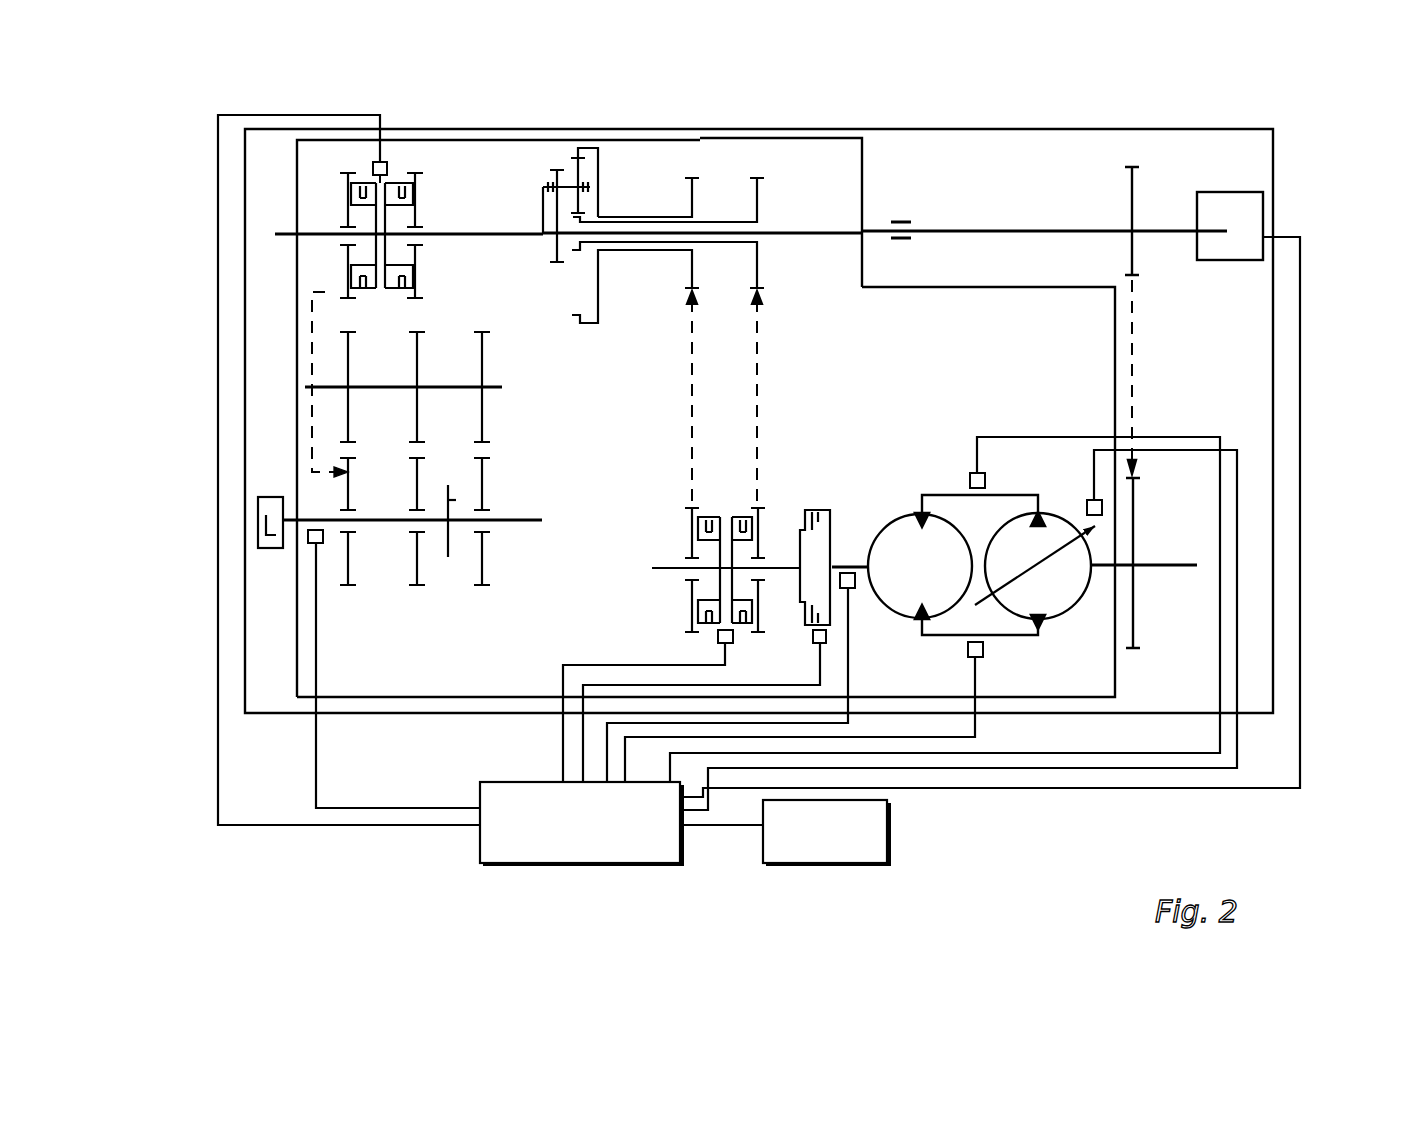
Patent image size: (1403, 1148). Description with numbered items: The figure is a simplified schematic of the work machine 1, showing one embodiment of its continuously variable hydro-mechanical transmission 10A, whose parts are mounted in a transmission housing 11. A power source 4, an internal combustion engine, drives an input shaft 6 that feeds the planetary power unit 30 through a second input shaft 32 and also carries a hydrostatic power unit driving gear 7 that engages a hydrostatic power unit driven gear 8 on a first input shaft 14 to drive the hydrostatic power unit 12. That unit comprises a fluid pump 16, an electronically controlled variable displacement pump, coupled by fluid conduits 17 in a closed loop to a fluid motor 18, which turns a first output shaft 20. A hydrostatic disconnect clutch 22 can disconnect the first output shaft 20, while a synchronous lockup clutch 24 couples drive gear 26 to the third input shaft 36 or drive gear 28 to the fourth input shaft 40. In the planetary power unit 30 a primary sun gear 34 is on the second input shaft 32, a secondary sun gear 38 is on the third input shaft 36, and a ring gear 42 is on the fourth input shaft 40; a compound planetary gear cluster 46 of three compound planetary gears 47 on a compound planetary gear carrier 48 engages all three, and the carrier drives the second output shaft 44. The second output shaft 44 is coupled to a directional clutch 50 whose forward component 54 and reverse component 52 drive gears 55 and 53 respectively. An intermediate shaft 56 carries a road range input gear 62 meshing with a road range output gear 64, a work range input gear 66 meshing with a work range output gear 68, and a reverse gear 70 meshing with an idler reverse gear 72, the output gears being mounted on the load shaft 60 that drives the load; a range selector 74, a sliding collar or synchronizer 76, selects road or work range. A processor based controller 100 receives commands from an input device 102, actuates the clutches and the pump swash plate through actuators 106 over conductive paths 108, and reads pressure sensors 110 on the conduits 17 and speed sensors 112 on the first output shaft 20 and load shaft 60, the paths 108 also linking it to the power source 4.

The work machine 1 is at (1278, 139).
The power source 4 is at (1266, 212).
The input shaft 6 is at (1023, 229).
The hydrostatic power unit driving gear 7 is at (1136, 185).
The hydrostatic power unit driven gear 8 is at (1137, 503).
The hydro-mechanical transmission 10A is at (706, 393).
The transmission housing 11 is at (787, 135).
The hydrostatic power unit 12 is at (1027, 626).
The first input shaft 14 is at (1172, 566).
The fluid pump 16 is at (1072, 607).
The fluid conduits 17 is at (1012, 490).
The fluid motor 18 is at (888, 613).
The first output shaft 20 is at (858, 563).
The hydrostatic disconnect clutch 22 is at (812, 505).
The synchronous lockup clutch 24 is at (706, 559).
The drive gear 26 is at (758, 515).
The drive gear 28 is at (690, 515).
The planetary power unit 30 is at (624, 296).
The second input shaft 32 is at (810, 230).
The primary sun gear 34 is at (555, 246).
The third input shaft 36 is at (725, 220).
The secondary sun gear 38 is at (578, 252).
The fourth input shaft 40 is at (660, 215).
The ring gear 42 is at (597, 320).
The second output shaft 44 is at (462, 236).
The compound planetary gear cluster 46 is at (544, 178).
The compound planetary gears 47 is at (575, 178).
The compound planetary gear carrier 48 is at (542, 218).
The directional clutch 50 is at (446, 202).
The reverse component 52 is at (314, 193).
The gear 53 is at (345, 211).
The forward component 54 is at (420, 175).
The gear 55 is at (423, 288).
The intermediate shaft 56 is at (500, 390).
The load shaft 60 is at (515, 525).
The road range input gear 62 is at (420, 370).
The road range output gear 64 is at (415, 572).
The work range input gear 66 is at (488, 360).
The work range output gear 68 is at (488, 580).
The reverse gear 70 is at (352, 352).
The idler reverse gear 72 is at (350, 590).
The range selector 74 is at (450, 566).
The sliding collar or synchronizer 76 is at (452, 500).
The controller 100 is at (582, 868).
The input device 102 is at (890, 843).
The actuators 106 is at (381, 162).
The conductive paths 108 is at (560, 745).
The pressure sensors 110 is at (968, 481).
The speed sensors 112 is at (308, 548).